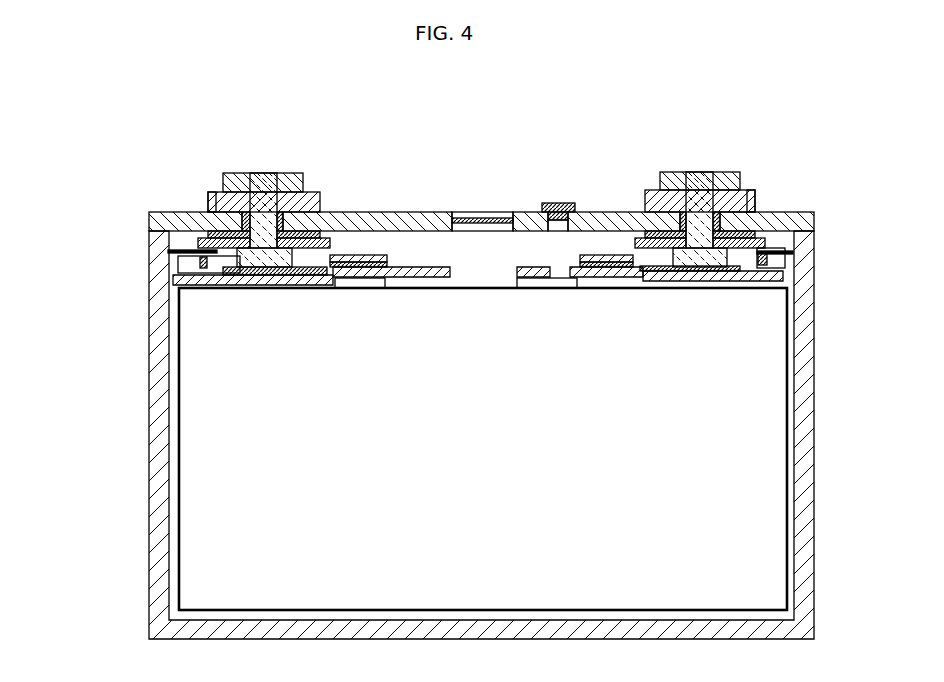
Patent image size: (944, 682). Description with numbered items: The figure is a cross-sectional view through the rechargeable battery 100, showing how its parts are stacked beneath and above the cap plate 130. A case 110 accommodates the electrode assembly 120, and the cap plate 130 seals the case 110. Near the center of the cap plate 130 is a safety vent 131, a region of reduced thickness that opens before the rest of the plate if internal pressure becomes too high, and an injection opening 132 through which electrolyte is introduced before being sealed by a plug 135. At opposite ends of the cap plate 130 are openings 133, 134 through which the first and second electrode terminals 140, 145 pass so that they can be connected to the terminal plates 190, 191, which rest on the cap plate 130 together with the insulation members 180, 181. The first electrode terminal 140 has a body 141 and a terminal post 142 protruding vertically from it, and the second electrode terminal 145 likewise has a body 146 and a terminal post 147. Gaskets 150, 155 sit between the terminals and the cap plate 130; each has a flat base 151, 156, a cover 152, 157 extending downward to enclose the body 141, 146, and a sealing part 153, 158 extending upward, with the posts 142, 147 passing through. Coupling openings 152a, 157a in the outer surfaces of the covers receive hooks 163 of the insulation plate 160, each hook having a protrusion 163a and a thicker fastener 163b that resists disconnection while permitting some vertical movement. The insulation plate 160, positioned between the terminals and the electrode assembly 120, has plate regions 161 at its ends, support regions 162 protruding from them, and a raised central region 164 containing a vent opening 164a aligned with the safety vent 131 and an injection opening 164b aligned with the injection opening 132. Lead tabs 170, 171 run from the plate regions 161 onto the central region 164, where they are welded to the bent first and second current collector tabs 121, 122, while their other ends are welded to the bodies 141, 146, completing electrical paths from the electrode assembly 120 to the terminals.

The rechargeable battery 100 is at (63, 96).
The case 110 is at (810, 505).
The electrode assembly 120 is at (760, 419).
The first current collector tab 121 is at (378, 284).
The second current collector tab 122 is at (612, 286).
The cap plate 130 is at (148, 220).
The safety vent 131 is at (463, 219).
The injection opening 132 is at (553, 228).
The opening 133 is at (242, 192).
The opening 134 is at (707, 190).
The plug 135 is at (558, 203).
The first electrode terminal 140 is at (353, 120).
The body 141 is at (336, 222).
The terminal post 142 is at (271, 185).
The second electrode terminal 145 is at (705, 120).
The body 146 is at (626, 222).
The terminal post 147 is at (692, 185).
The gasket 150 is at (80, 232).
The base 151 is at (237, 255).
The cover 152 is at (180, 280).
The coupling opening 152a is at (222, 232).
The sealing part 153 is at (210, 238).
The gasket 155 is at (771, 330).
The base 156 is at (717, 272).
The cover 157 is at (768, 280).
The coupling opening 157a is at (768, 246).
The sealing part 158 is at (690, 270).
The insulation plate 160 is at (357, 370).
The plate region 161 is at (318, 272).
The support region 162 is at (180, 265).
The hook 163 is at (292, 333).
The protrusion 163a is at (207, 262).
The fastener 163b is at (217, 253).
The central region 164 is at (355, 277).
The vent opening 164a is at (470, 277).
The injection opening 164b is at (562, 277).
The lead tab 170 is at (360, 255).
The lead tab 171 is at (600, 255).
The insulation member 180 is at (208, 192).
The insulation member 181 is at (756, 192).
The terminal plate 190 is at (225, 174).
The terminal plate 191 is at (740, 174).